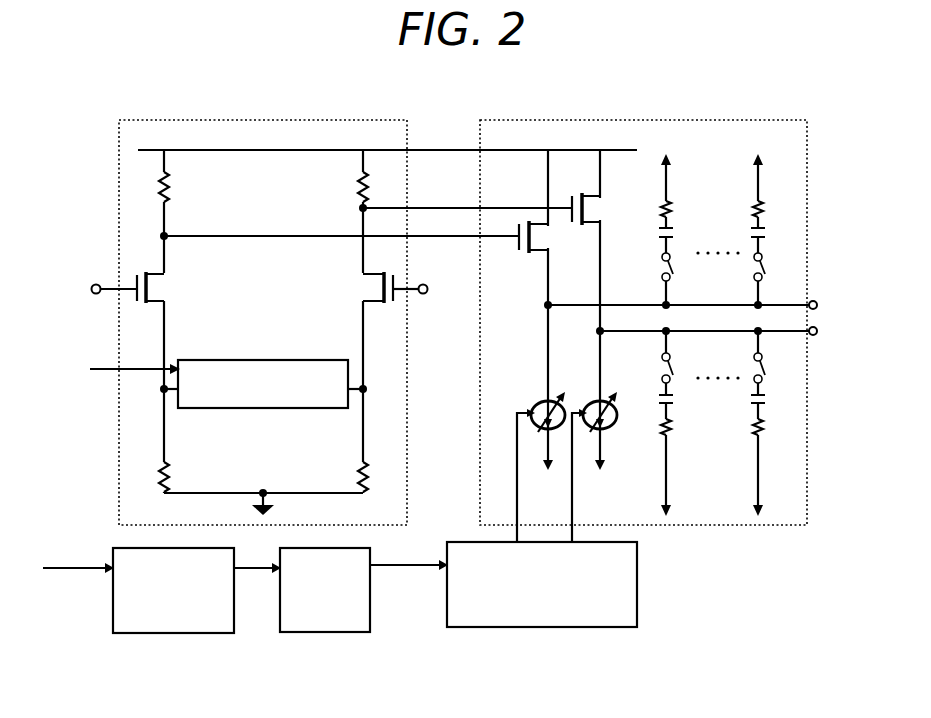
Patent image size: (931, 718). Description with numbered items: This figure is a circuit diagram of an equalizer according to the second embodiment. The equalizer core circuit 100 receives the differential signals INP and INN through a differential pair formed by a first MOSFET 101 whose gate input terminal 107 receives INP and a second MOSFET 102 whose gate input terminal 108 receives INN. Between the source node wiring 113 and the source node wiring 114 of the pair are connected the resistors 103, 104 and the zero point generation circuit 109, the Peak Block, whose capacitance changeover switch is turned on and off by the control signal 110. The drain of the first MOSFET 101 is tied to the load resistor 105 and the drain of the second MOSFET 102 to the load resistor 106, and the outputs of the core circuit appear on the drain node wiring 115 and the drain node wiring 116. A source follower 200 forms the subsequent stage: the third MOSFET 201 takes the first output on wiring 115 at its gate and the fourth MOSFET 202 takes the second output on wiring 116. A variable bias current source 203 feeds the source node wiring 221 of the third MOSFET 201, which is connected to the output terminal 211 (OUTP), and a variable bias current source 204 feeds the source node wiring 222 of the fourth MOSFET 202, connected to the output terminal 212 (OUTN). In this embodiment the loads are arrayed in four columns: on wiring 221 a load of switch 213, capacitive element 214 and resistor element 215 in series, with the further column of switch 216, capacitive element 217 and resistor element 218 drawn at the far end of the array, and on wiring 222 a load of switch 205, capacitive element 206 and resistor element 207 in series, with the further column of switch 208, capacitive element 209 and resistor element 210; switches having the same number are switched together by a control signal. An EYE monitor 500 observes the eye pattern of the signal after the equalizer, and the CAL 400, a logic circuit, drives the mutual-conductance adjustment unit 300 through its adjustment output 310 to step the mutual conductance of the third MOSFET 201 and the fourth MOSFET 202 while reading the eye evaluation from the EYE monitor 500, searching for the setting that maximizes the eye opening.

The equalizer core circuit 100 is at (262, 121).
The source follower 200 is at (658, 121).
The first MOSFET 101 is at (160, 294).
The second MOSFET 102 is at (368, 294).
The resistor 103 is at (158, 463).
The resistor 104 is at (372, 463).
The load resistor 105 is at (182, 191).
The load resistor 106 is at (348, 191).
The gate input terminal 107 is at (96, 283).
The gate input terminal 108 is at (425, 297).
The zero point generation circuit 109 is at (258, 362).
The control signal 110 is at (118, 358).
The source node wiring 113 is at (166, 425).
The source node wiring 114 is at (361, 425).
The drain node wiring 115 is at (455, 235).
The drain node wiring 116 is at (423, 207).
The third MOSFET 201 is at (538, 228).
The fourth MOSFET 202 is at (584, 204).
The variable bias current source 203 is at (552, 442).
The variable bias current source 204 is at (604, 442).
The ON/OFF switch 205 is at (662, 361).
The capacitive element 206 is at (662, 398).
The resistor element 207 is at (662, 431).
The ON/OFF switch 208 is at (752, 364).
The capacitive element 209 is at (749, 401).
The resistor element 210 is at (754, 436).
The output terminal 211 is at (816, 301).
The output terminal 212 is at (817, 336).
The switch 213 is at (662, 299).
The capacitive element 214 is at (662, 259).
The resistor element 215 is at (662, 208).
The switch SW4 upper 216 is at (755, 285).
The resistor REFN and capacitor CEFN upper 217 is at (750, 229).
The supply terminal of REFN branch 218 is at (760, 200).
The source node wiring 221 is at (547, 283).
The source node wiring 222 is at (597, 268).
The gm2 adjustment unit 300 is at (520, 629).
The adjust signal 310 is at (410, 568).
The CAL 400 is at (322, 634).
The EYE monitor 500 is at (170, 635).